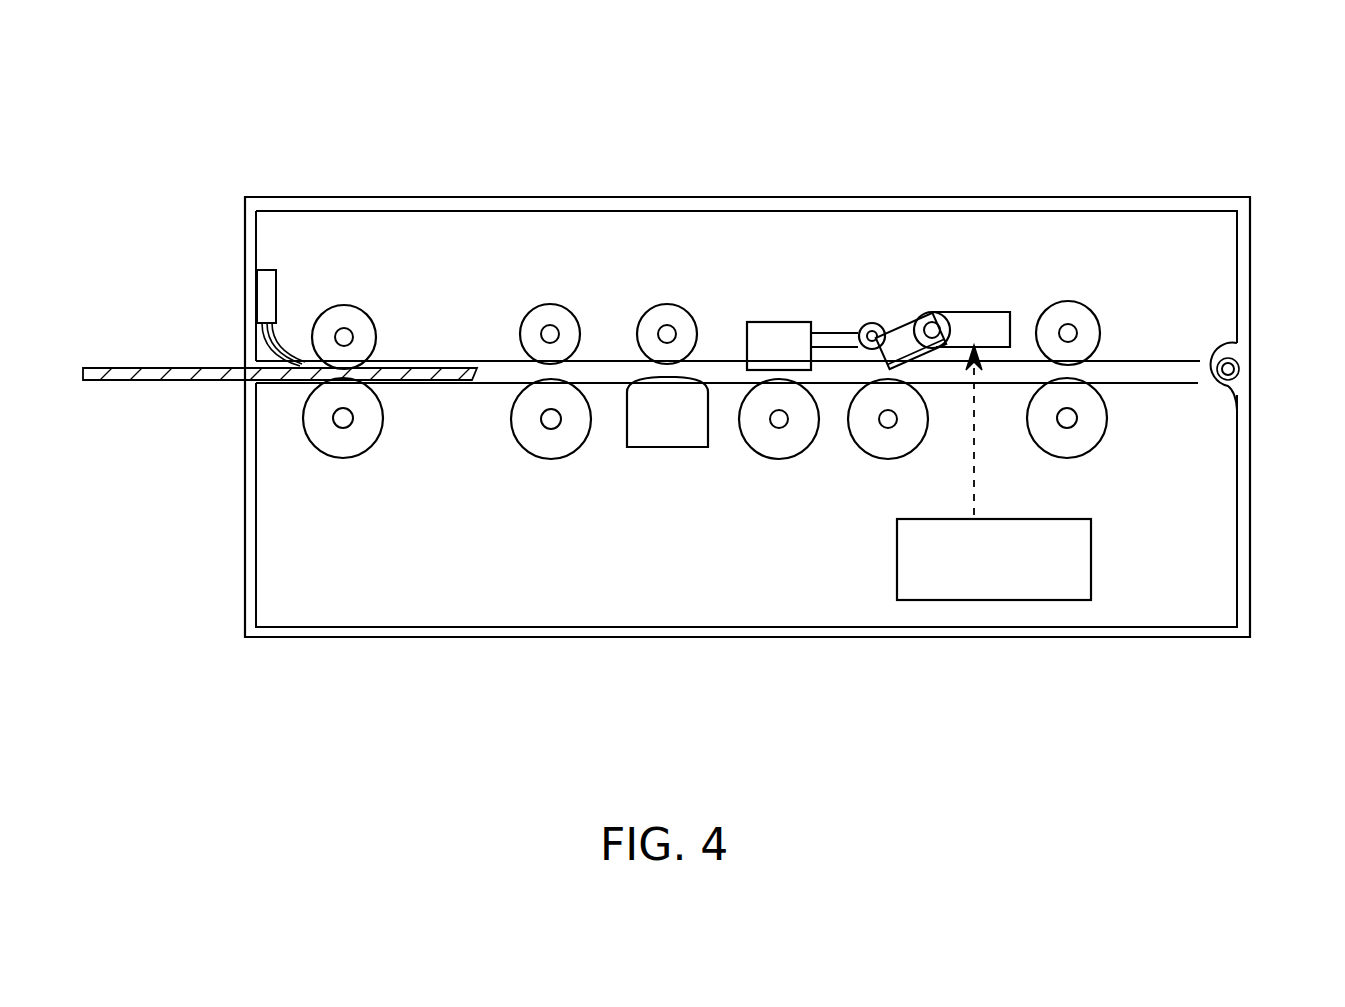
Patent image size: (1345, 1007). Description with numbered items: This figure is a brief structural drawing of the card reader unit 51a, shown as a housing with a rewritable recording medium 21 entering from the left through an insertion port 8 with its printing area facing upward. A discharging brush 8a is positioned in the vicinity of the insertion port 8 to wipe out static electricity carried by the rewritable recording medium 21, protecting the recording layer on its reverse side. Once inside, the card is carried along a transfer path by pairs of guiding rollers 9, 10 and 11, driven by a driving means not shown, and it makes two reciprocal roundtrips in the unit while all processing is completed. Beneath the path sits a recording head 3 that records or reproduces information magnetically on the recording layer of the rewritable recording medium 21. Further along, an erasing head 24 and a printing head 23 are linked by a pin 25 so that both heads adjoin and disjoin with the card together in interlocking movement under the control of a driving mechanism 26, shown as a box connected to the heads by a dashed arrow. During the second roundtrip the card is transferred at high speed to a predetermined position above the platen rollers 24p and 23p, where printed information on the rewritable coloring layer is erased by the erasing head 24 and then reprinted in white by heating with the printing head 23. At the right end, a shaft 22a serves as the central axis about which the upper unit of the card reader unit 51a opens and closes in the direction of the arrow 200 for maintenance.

The arrow 200 is at (385, 75).
The card reader unit 51a is at (680, 197).
The rewritable recording medium 21 is at (107, 368).
The insertion port 8 is at (238, 360).
The discharging brush 8a is at (275, 348).
The guiding roller 9 is at (360, 325).
The guiding roller 10 is at (570, 318).
The recording head 3 is at (679, 438).
The erasing head 24 is at (766, 332).
The pin 25 is at (862, 331).
The printing head 23 is at (906, 322).
The platen roller 24p is at (782, 448).
The platen roller 23p is at (889, 448).
The guiding roller 11 is at (1090, 317).
The shaft 22a is at (1232, 367).
The driving mechanism 26 is at (1093, 576).